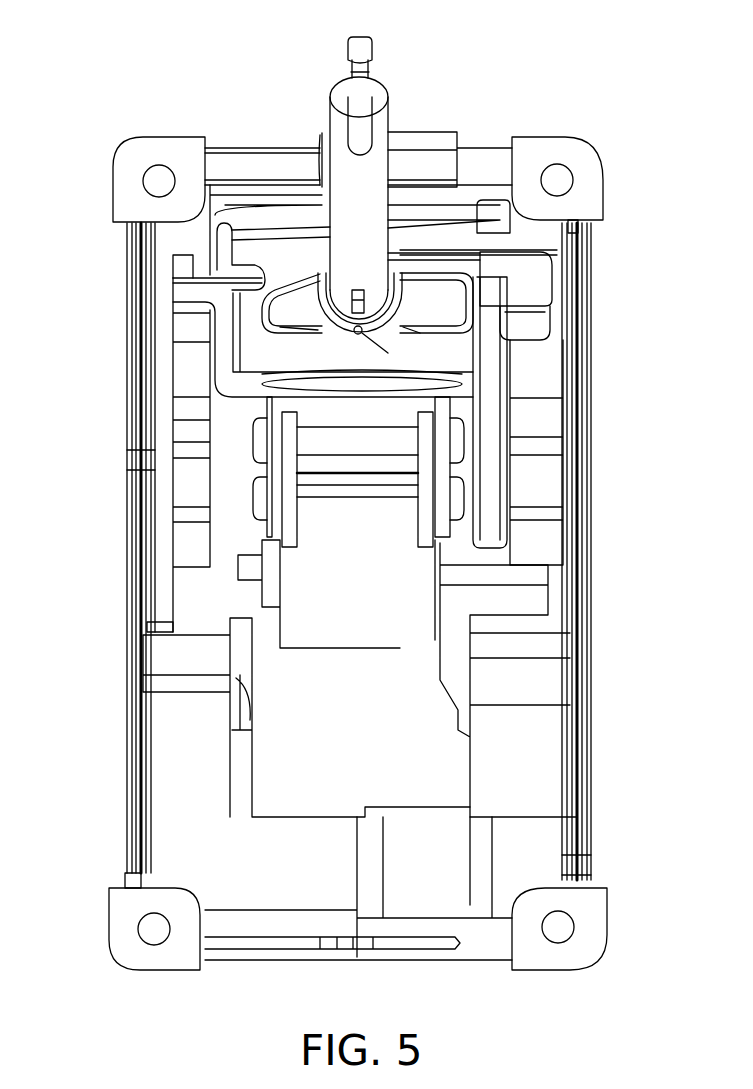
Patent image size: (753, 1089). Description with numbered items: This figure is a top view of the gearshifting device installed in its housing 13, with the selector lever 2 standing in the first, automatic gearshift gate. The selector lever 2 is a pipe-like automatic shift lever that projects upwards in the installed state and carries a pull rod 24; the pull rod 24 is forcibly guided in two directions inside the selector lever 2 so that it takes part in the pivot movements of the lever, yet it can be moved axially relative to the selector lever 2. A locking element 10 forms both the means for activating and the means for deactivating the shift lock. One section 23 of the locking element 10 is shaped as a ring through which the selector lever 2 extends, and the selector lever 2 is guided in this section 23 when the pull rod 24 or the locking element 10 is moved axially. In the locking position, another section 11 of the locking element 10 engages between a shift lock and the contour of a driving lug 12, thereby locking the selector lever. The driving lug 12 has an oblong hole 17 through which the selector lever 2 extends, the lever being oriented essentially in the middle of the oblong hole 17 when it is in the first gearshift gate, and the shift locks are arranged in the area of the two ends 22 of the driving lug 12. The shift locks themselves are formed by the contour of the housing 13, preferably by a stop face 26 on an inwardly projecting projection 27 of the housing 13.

The selector lever 2 is at (372, 170).
The locking element 10 is at (443, 275).
The section of the locking element 11 is at (520, 267).
The driving lug 12 is at (273, 357).
The housing 13 is at (127, 240).
The oblong hole 17 is at (427, 317).
The ends of the driving lug 22 is at (182, 297).
The section of the locking element 23 is at (320, 330).
The pull rod 24 is at (363, 82).
The stop face 26 is at (173, 473).
The projection 27 is at (540, 492).